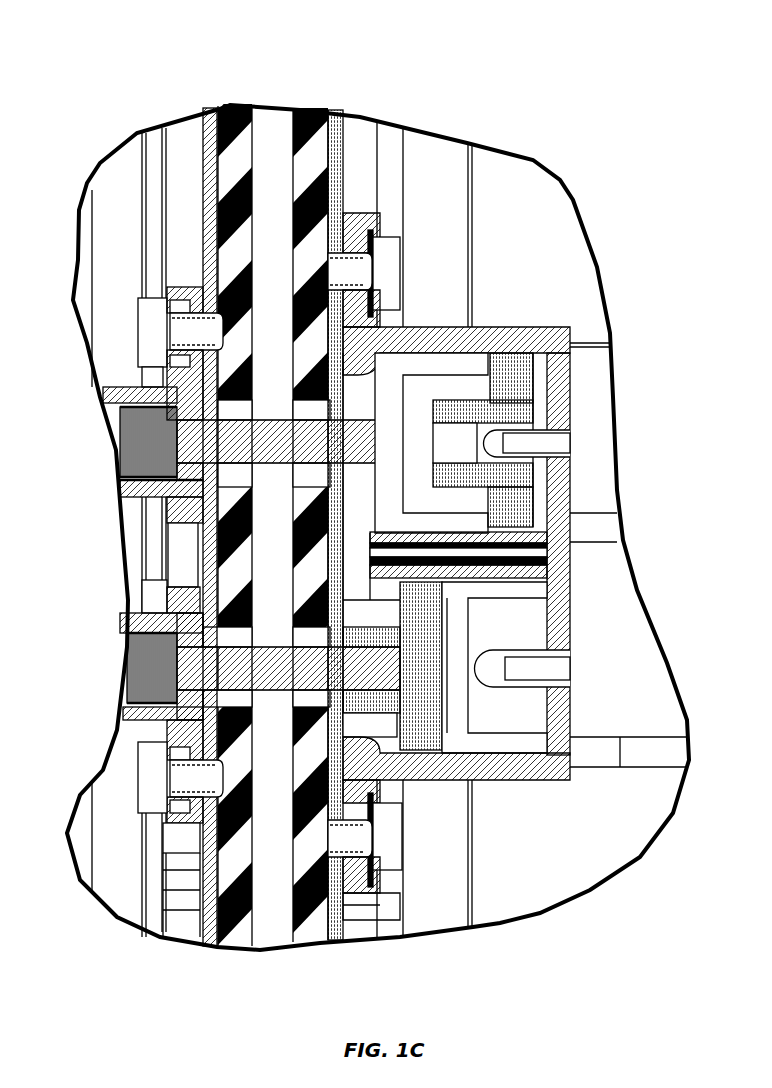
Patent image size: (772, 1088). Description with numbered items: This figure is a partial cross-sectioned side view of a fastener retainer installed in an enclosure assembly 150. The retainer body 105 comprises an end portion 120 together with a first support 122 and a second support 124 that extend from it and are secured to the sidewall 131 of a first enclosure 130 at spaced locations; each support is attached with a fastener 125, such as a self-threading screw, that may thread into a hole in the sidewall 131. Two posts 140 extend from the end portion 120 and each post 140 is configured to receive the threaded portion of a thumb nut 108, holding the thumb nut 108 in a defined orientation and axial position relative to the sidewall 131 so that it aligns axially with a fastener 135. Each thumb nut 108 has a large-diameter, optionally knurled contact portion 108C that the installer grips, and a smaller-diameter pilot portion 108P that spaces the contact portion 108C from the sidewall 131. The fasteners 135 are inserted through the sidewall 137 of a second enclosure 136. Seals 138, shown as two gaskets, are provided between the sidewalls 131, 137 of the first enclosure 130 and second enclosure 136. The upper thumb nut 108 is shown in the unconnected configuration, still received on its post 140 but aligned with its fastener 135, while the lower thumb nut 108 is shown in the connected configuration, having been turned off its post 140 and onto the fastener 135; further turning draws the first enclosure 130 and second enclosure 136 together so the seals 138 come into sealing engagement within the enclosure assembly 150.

The enclosure assembly 150 is at (553, 88).
The second enclosure 136 is at (208, 106).
The seals 138 is at (243, 115).
The sidewall 137 is at (200, 143).
The sidewall 131 is at (345, 133).
The first enclosure 130 is at (335, 109).
The fastener 135 is at (237, 447).
The fastener 125 is at (403, 265).
The second support 124 is at (473, 328).
The retainer body 105 is at (513, 350).
The pilot portion 108P is at (453, 398).
The contact portion 108C is at (540, 318).
The thumb nut 108 is at (538, 394).
The post 140 is at (543, 467).
The end portion 120 is at (570, 593).
The first support 122 is at (540, 795).